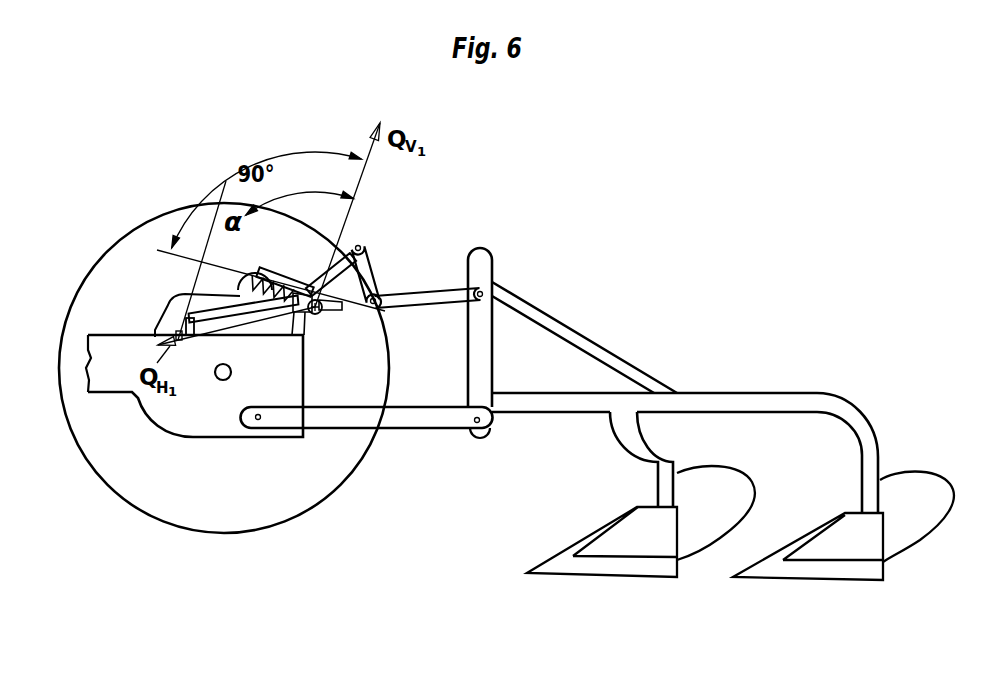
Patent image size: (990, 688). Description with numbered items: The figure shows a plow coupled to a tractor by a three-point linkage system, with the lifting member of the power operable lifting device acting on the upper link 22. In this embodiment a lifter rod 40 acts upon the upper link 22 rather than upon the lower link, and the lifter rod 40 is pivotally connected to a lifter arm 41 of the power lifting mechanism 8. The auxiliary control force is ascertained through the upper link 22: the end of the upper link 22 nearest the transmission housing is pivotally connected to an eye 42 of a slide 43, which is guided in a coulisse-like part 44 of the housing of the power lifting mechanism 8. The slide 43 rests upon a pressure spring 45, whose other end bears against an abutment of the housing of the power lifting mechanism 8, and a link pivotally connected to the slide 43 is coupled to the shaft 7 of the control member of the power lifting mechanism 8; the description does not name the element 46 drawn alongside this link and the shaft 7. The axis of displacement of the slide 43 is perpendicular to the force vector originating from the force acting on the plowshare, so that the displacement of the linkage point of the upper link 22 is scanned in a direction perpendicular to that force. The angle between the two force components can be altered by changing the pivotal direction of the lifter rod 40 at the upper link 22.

The shaft 7 is at (193, 338).
The power lifting mechanism 8 is at (243, 350).
The upper link 22 is at (427, 292).
The lifter rod 40 is at (370, 267).
The lifter arm 41 is at (340, 258).
The eye 42 is at (316, 313).
The slide 43 is at (298, 310).
The coulisse-like part 44 is at (285, 283).
The pressure spring 45 is at (272, 275).
The lever 46 is at (222, 318).